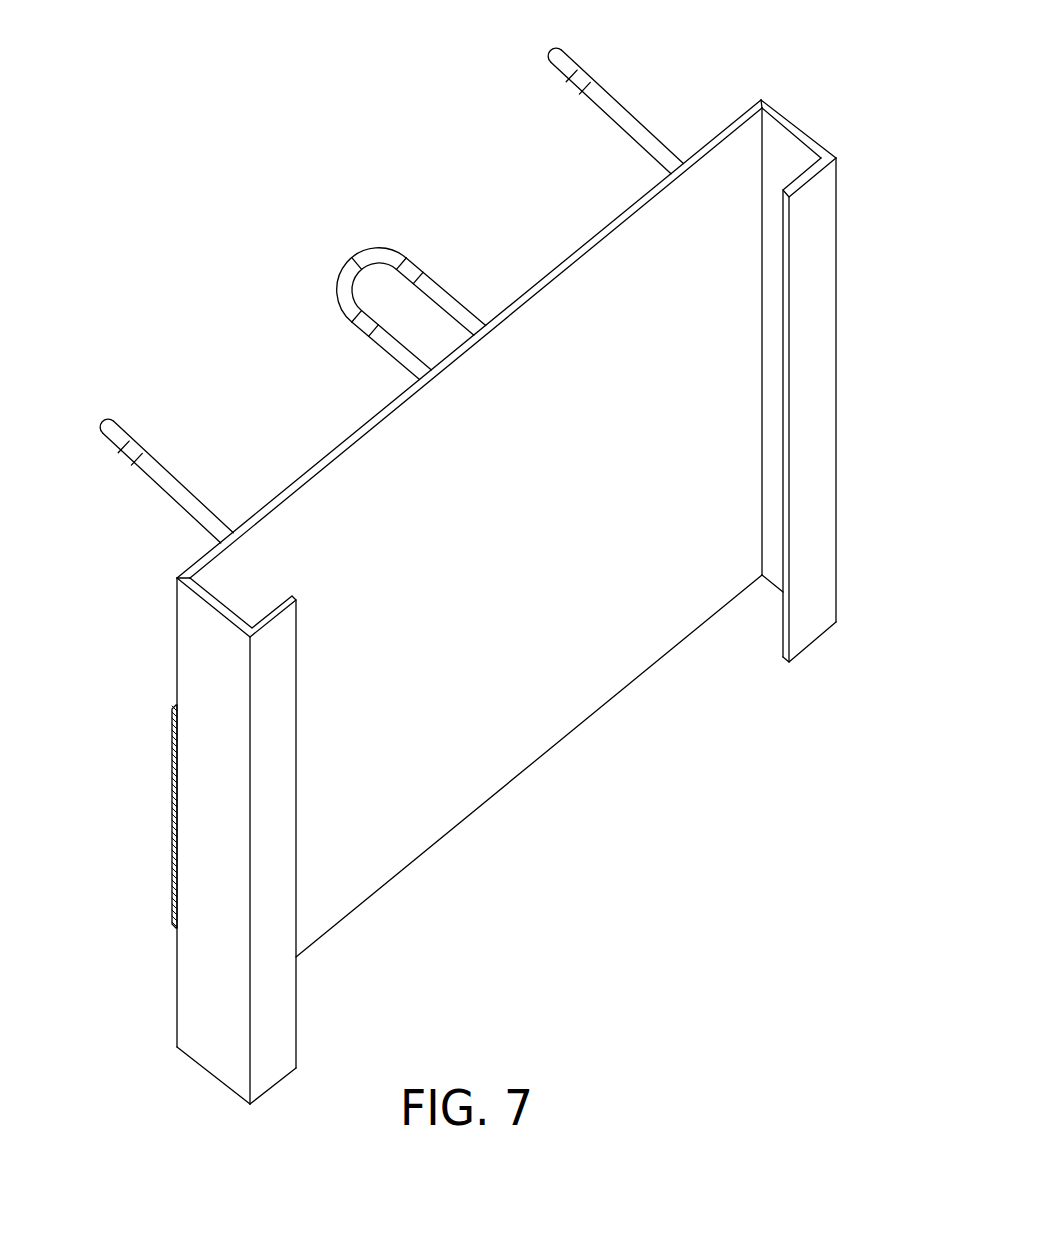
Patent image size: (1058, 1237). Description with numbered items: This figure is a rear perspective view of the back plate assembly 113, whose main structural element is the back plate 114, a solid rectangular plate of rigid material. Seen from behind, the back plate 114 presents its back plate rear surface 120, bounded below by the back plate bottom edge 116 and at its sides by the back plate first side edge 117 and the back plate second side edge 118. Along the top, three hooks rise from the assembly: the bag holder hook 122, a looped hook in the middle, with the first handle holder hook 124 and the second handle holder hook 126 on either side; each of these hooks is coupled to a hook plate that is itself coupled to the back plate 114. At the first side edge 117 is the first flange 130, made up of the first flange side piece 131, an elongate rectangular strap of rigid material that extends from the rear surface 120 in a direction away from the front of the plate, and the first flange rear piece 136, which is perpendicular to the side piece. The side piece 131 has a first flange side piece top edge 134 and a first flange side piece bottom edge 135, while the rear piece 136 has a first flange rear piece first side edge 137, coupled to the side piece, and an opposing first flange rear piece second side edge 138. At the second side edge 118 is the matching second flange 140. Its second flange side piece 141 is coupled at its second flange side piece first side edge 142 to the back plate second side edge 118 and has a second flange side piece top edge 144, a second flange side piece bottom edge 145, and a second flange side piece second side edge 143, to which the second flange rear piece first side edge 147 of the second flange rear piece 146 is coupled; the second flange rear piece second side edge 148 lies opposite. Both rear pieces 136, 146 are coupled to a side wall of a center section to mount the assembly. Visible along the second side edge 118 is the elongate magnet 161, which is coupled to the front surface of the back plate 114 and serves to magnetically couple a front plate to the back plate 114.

The back plate assembly 113 is at (297, 125).
The back plate 114 is at (535, 738).
The back plate bottom edge 116 is at (450, 833).
The back plate first side edge 117 is at (761, 97).
The back plate second side edge 118 is at (177, 990).
The back plate rear surface 120 is at (500, 553).
The bag holder hook 122 is at (382, 247).
The first handle holder hook 124 is at (571, 75).
The second handle holder hook 126 is at (120, 436).
The first flange 130 is at (853, 570).
The first flange side piece 131 is at (806, 158).
The first flange side piece top edge 134 is at (793, 132).
The first flange side piece bottom edge 135 is at (775, 586).
The first flange rear piece 136 is at (822, 297).
The first flange rear piece first side edge 137 is at (834, 236).
The first flange rear piece second side edge 138 is at (786, 428).
The second flange 140 is at (115, 675).
The second flange side piece 141 is at (196, 787).
The second flange side piece first side edge 142 is at (190, 620).
The second flange side piece second side edge 143 is at (243, 1075).
The second flange side piece top edge 144 is at (222, 608).
The second flange side piece bottom edge 145 is at (196, 1064).
The second flange rear piece 146 is at (280, 978).
The second flange rear piece first side edge 147 is at (258, 1073).
The second flange rear piece second side edge 148 is at (300, 717).
The magnet 161 is at (172, 853).